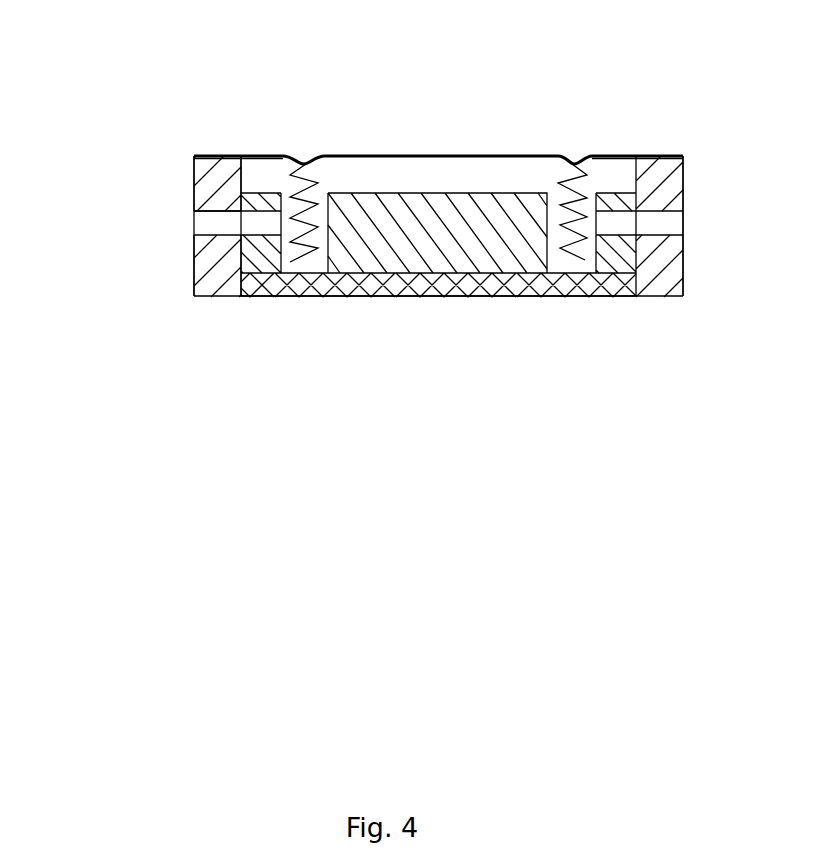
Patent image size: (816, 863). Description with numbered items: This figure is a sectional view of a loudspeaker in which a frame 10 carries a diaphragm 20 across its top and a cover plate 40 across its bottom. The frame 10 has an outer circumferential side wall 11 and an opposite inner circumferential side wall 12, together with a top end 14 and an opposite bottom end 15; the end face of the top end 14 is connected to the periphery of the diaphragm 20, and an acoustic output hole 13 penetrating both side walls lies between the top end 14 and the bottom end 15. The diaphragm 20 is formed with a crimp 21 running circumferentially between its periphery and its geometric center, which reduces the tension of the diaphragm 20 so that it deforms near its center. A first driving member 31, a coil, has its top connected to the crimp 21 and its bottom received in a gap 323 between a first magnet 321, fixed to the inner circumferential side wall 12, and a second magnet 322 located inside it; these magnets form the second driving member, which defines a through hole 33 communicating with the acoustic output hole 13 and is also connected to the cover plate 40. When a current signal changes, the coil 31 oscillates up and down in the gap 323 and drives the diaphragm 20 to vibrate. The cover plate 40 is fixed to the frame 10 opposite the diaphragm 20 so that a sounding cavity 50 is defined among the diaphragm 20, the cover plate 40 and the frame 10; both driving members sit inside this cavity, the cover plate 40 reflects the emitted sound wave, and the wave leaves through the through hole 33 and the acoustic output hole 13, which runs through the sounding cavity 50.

The frame 10 is at (88, 150).
The outer circumferential side wall 11 is at (194, 258).
The inner circumferential side wall 12 is at (194, 181).
The acoustic output hole 13 is at (208, 222).
The top end 14 is at (194, 158).
The bottom end 15 is at (194, 288).
The diaphragm 20 is at (447, 156).
The crimp 21 is at (573, 164).
The first driving member 31 is at (323, 273).
The through hole 33 is at (258, 225).
The first magnet 321 is at (271, 273).
The second magnet 322 is at (422, 262).
The gap 323 is at (333, 243).
The cover plate 40 is at (561, 297).
The sounding cavity 50 is at (608, 170).